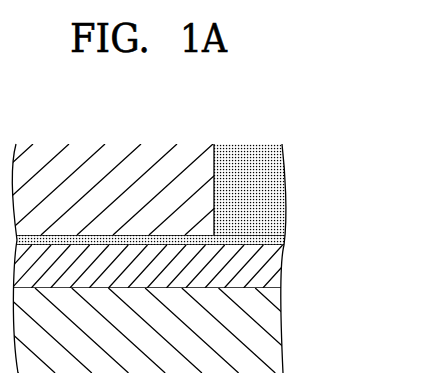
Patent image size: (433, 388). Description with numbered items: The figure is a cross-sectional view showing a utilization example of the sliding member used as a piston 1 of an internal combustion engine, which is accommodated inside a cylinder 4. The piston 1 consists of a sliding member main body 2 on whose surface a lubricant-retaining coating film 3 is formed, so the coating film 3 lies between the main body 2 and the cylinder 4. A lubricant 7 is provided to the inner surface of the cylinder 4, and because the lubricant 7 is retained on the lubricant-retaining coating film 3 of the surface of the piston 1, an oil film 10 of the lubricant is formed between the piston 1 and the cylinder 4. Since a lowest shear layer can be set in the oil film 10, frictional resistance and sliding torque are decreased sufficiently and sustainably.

The piston 1 is at (316, 289).
The sliding member main body 2 is at (262, 334).
The lubricant-retaining coating film 3 is at (263, 267).
The cylinder 4 is at (143, 160).
The lubricant 7 is at (258, 180).
The oil film 10 is at (283, 242).